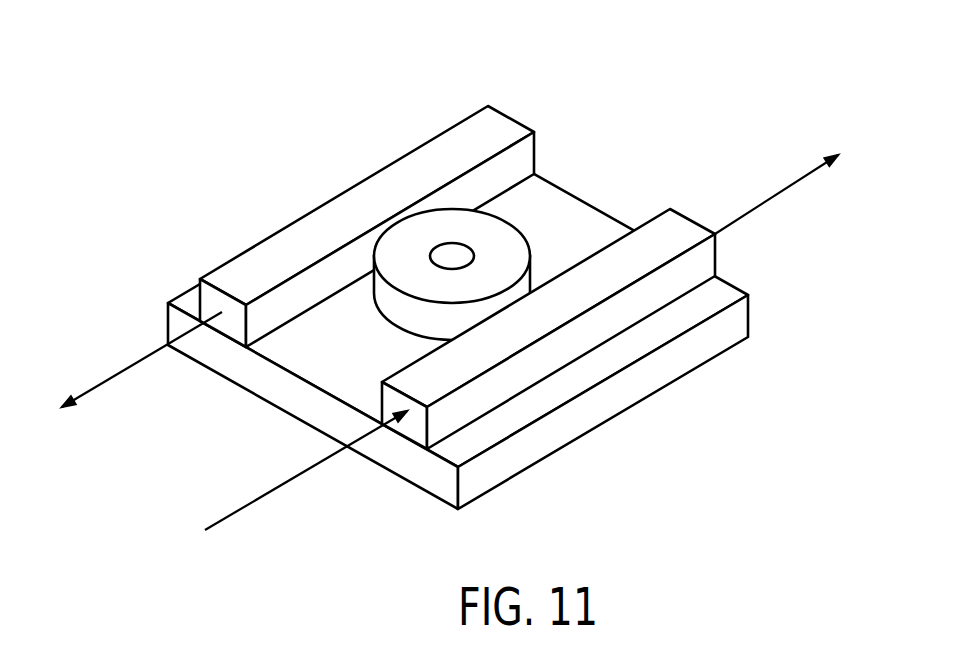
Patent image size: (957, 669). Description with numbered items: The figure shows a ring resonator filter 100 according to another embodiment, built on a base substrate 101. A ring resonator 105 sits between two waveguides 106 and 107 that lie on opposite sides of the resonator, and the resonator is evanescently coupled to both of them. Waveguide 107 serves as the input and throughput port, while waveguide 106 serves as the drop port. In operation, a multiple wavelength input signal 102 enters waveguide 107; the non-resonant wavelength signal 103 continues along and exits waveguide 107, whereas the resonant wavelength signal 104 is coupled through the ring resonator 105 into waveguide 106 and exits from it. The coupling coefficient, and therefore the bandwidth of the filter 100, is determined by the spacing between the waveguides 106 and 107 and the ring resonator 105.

The ring resonator filter 100 is at (488, 265).
The base plate 101 is at (722, 326).
The multiple wavelength input signal 102 is at (275, 490).
The non-resonant wavelength signal 103 is at (770, 200).
The resonant wavelength signal 104 is at (120, 377).
The ring resonator 105 is at (410, 250).
The waveguide 106 is at (397, 183).
The waveguide 107 is at (578, 283).